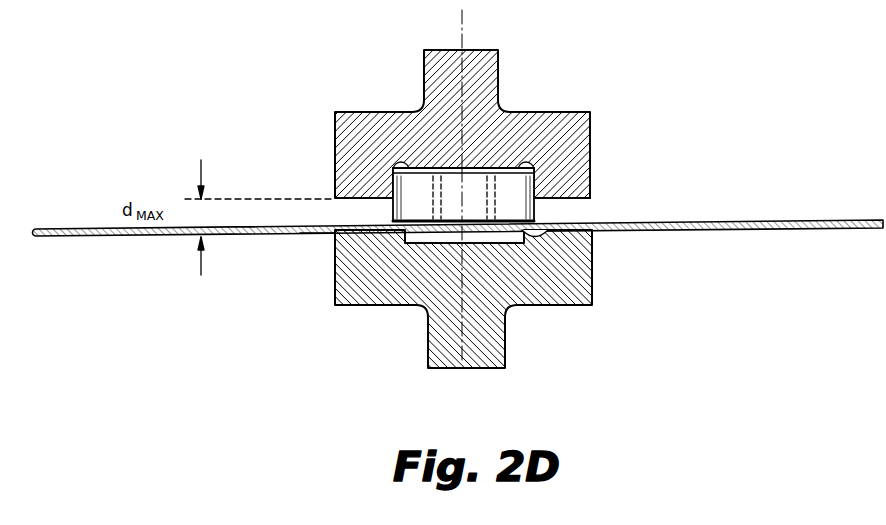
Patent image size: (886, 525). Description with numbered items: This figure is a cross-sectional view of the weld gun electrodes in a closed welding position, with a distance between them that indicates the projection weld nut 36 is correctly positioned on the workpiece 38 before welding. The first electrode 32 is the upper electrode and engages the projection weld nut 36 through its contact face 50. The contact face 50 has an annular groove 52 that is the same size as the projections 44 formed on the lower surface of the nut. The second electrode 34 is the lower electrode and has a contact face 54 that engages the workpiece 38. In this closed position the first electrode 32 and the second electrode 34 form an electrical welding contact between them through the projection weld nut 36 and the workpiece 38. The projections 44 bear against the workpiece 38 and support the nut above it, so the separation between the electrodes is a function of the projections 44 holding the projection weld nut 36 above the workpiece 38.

The first electrode 32 is at (590, 112).
The second electrode 34 is at (587, 283).
The projection weld nut 36 is at (540, 196).
The workpiece 38 is at (752, 221).
The projections 44 is at (548, 230).
The contact face 50 is at (453, 170).
The annular groove 52 is at (526, 165).
The contact face 54 is at (333, 232).